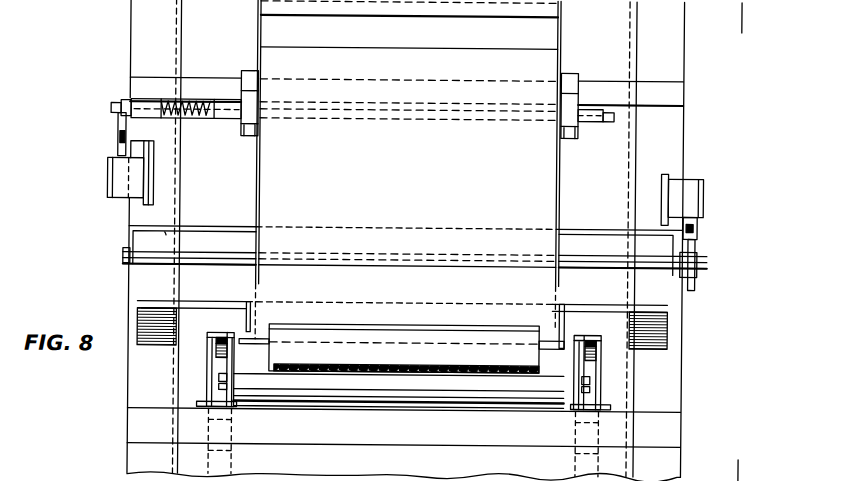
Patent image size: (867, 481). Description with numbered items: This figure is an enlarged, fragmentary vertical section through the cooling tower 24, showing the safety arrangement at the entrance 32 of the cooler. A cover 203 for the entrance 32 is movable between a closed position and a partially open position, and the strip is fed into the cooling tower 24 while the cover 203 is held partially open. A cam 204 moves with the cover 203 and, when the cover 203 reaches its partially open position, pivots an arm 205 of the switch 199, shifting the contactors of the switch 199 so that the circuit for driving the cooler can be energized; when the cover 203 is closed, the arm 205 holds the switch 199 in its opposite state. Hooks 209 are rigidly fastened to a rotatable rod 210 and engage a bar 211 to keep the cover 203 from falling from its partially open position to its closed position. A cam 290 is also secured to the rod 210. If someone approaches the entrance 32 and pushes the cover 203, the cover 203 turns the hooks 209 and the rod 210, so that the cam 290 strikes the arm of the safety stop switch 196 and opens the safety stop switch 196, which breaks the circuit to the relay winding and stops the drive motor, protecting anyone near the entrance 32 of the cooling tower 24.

The cooling tower 24 is at (124, 14).
The hooks 209 is at (248, 72).
The cam 290 is at (117, 128).
The safety stop switch 196 is at (113, 184).
The rotatable rod 210 is at (607, 121).
The switch 199 is at (712, 209).
The arm 205 is at (697, 222).
The cam 204 is at (697, 257).
The bar 211 is at (560, 307).
The cover 203 is at (550, 340).
The entrance 32 is at (190, 340).